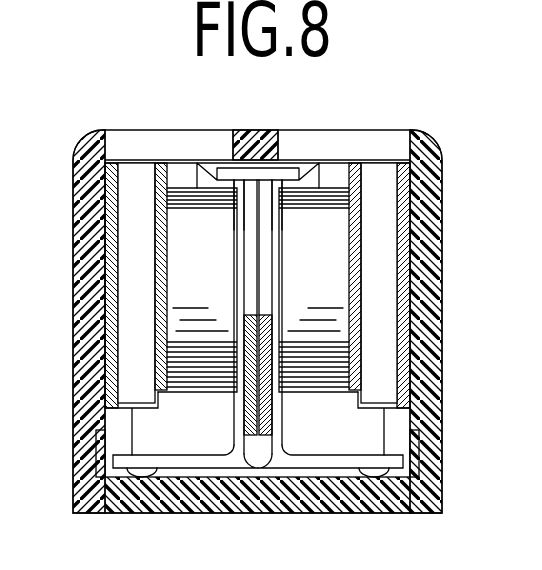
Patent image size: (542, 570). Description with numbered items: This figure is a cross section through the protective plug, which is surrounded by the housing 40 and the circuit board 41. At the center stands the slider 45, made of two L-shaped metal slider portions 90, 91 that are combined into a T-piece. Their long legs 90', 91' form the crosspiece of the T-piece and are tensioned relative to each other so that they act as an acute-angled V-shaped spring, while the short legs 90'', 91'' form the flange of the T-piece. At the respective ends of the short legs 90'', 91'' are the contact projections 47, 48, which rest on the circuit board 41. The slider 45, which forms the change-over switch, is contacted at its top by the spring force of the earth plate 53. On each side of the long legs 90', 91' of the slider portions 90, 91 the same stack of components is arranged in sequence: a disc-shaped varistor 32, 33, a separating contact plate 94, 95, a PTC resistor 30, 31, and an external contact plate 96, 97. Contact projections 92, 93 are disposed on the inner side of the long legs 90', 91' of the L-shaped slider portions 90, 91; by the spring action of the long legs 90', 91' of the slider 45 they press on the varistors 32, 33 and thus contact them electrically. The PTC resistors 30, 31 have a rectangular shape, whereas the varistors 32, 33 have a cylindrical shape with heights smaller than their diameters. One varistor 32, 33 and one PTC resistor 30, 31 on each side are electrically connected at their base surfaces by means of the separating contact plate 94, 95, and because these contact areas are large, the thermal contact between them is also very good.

The PTC resistor 30 is at (128, 310).
The PTC resistor 31 is at (383, 311).
The varistor 32 is at (216, 383).
The varistor 33 is at (315, 383).
The housing 40 is at (408, 130).
The circuit board 41 is at (257, 505).
The slider 45 is at (272, 430).
The contact projection 47 is at (150, 471).
The contact projection 48 is at (375, 476).
The earth plate 53 is at (238, 168).
The slider portion 90 is at (185, 365).
The long leg 90' is at (225, 317).
The short leg 90'' is at (185, 446).
The slider portion 91 is at (330, 365).
The long leg 91' is at (295, 317).
The short leg 91'' is at (330, 441).
The contact projection 92 is at (241, 224).
The contact projection 93 is at (275, 224).
The separating contact plate 94 is at (160, 163).
The separating contact plate 95 is at (350, 163).
The external contact plate 96 is at (98, 237).
The external contact plate 97 is at (412, 237).